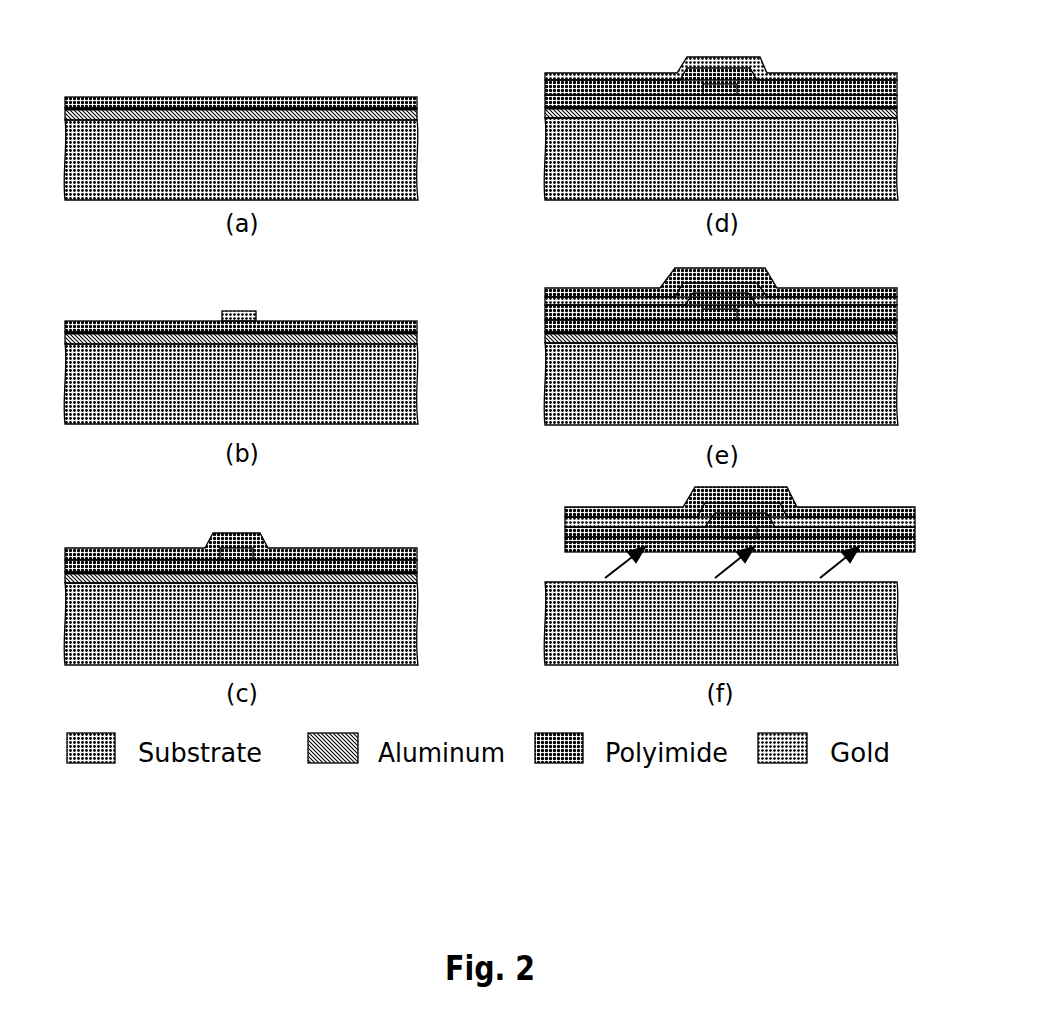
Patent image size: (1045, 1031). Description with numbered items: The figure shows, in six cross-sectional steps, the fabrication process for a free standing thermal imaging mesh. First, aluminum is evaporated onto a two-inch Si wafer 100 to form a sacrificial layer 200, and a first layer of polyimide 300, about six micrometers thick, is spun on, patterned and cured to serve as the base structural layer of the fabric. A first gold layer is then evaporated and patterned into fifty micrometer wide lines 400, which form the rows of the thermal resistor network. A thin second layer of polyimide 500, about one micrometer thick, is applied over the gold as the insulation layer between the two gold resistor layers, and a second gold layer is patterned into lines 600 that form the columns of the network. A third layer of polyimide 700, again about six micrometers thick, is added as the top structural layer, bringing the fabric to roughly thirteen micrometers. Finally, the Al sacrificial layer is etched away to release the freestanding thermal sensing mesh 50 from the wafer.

The freestanding thermal sensing mesh 50 is at (555, 529).
The Si wafer 100 is at (397, 173).
The sacrificial layer 200 is at (400, 114).
The first layer of polyimide 300 is at (380, 98).
The lines 400 is at (248, 311).
The second layer of polyimide 500 is at (313, 548).
The lines 600 is at (687, 70).
The third layer of polyimide 700 is at (630, 295).